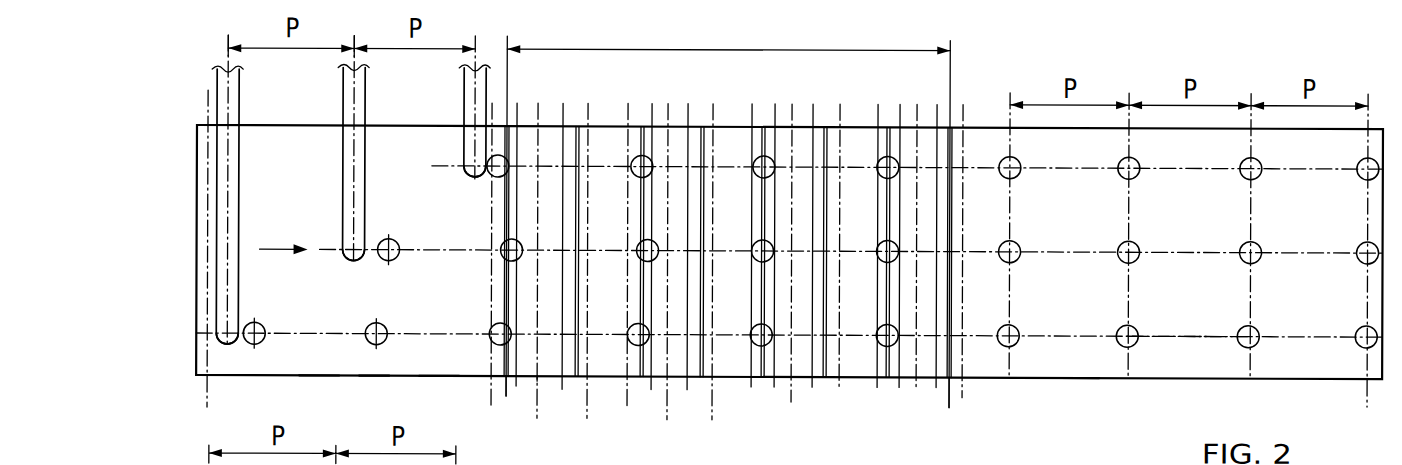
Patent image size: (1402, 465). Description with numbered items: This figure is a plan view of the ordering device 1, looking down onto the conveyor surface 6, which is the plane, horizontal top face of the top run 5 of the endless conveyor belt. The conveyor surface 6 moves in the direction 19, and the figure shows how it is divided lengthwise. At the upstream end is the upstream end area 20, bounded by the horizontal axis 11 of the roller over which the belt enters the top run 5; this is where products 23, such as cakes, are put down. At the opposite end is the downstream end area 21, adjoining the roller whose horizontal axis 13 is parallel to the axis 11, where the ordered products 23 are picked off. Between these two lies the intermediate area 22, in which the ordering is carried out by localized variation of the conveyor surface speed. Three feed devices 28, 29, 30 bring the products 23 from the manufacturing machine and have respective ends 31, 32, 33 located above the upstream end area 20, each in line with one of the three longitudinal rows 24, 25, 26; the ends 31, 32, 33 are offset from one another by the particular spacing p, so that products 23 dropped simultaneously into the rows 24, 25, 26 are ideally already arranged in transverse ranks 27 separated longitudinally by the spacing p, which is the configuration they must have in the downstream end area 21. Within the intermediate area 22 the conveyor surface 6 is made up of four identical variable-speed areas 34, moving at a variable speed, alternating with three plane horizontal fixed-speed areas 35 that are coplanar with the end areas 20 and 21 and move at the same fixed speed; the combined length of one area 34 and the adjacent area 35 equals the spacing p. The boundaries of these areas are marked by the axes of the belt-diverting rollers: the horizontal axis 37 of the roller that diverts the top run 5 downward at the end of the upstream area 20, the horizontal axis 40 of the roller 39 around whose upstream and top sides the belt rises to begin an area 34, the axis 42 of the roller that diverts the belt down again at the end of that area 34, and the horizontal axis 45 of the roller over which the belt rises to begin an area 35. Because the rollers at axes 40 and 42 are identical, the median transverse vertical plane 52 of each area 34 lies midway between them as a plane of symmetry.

The device 1 is at (183, 318).
The top run 5 is at (320, 353).
The conveyor surface 6 is at (436, 360).
The horizontal axis 11 is at (208, 386).
The horizontal axis 13 is at (1362, 400).
The direction 19 is at (276, 243).
The upstream end area 20 is at (368, 360).
The downstream end area 21 is at (1076, 362).
The intermediate area 22 is at (728, 213).
The products 23 is at (263, 318).
The longitudinal row 24 is at (418, 332).
The longitudinal row 25 is at (430, 249).
The longitudinal row 26 is at (446, 164).
The transverse ranks 27 is at (1128, 345).
The feed device 28 is at (241, 92).
The feed device 29 is at (366, 90).
The feed device 30 is at (487, 88).
The end of feed device 31 is at (232, 345).
The end of feed device 32 is at (358, 262).
The end of feed device 33 is at (466, 176).
The variable-speed area 34 is at (549, 135).
The fixed-speed area 35 is at (609, 138).
The horizontal axis 37 is at (492, 405).
The roller 39 is at (507, 395).
The horizontal axis 40 is at (517, 385).
The axis 42 is at (563, 388).
The horizontal axis 45 is at (588, 380).
The median transverse vertical plane 52 is at (547, 393).